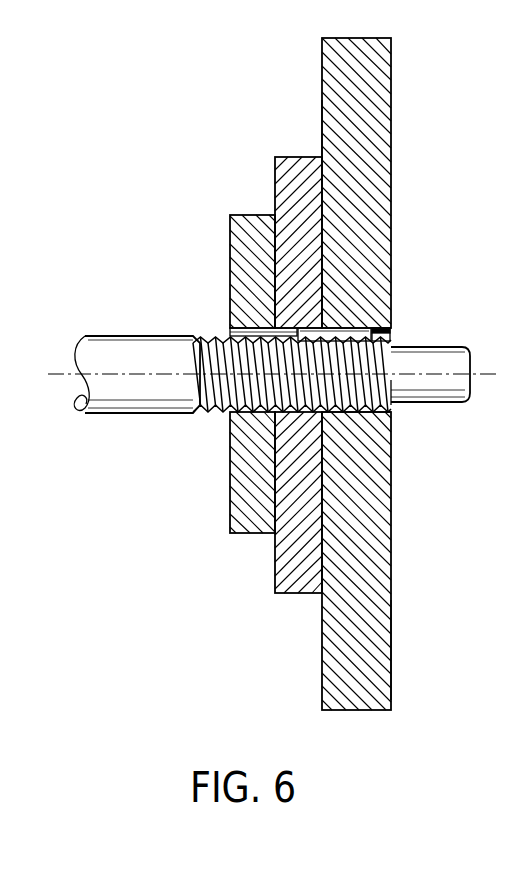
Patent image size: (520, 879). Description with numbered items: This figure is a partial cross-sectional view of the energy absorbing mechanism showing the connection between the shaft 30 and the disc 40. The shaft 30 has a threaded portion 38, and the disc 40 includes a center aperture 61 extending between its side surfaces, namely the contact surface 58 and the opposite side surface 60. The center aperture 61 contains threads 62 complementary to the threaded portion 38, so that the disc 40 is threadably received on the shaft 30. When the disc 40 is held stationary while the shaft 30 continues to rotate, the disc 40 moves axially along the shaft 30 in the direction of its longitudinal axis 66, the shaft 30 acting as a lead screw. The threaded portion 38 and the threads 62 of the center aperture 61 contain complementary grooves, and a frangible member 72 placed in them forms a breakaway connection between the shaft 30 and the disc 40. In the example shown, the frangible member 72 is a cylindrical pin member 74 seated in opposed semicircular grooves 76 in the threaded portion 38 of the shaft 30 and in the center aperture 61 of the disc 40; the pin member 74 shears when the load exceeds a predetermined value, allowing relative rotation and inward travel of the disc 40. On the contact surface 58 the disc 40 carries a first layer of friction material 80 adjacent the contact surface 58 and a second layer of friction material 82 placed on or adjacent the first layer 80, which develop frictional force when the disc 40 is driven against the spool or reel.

The shaft 30 is at (105, 393).
The threaded portion 38 is at (205, 337).
The disc 40 is at (430, 650).
The contact surface 58 is at (322, 128).
The side surface 60 is at (391, 62).
The center aperture 61 is at (385, 392).
The threads 62 is at (357, 417).
The longitudinal axis 66 is at (62, 375).
The frangible member 72 is at (392, 330).
The cylindrical pin member 74 is at (358, 333).
The semicircular grooves 76 is at (258, 335).
The first layer of friction material 80 is at (240, 237).
The second layer of friction material 82 is at (285, 175).